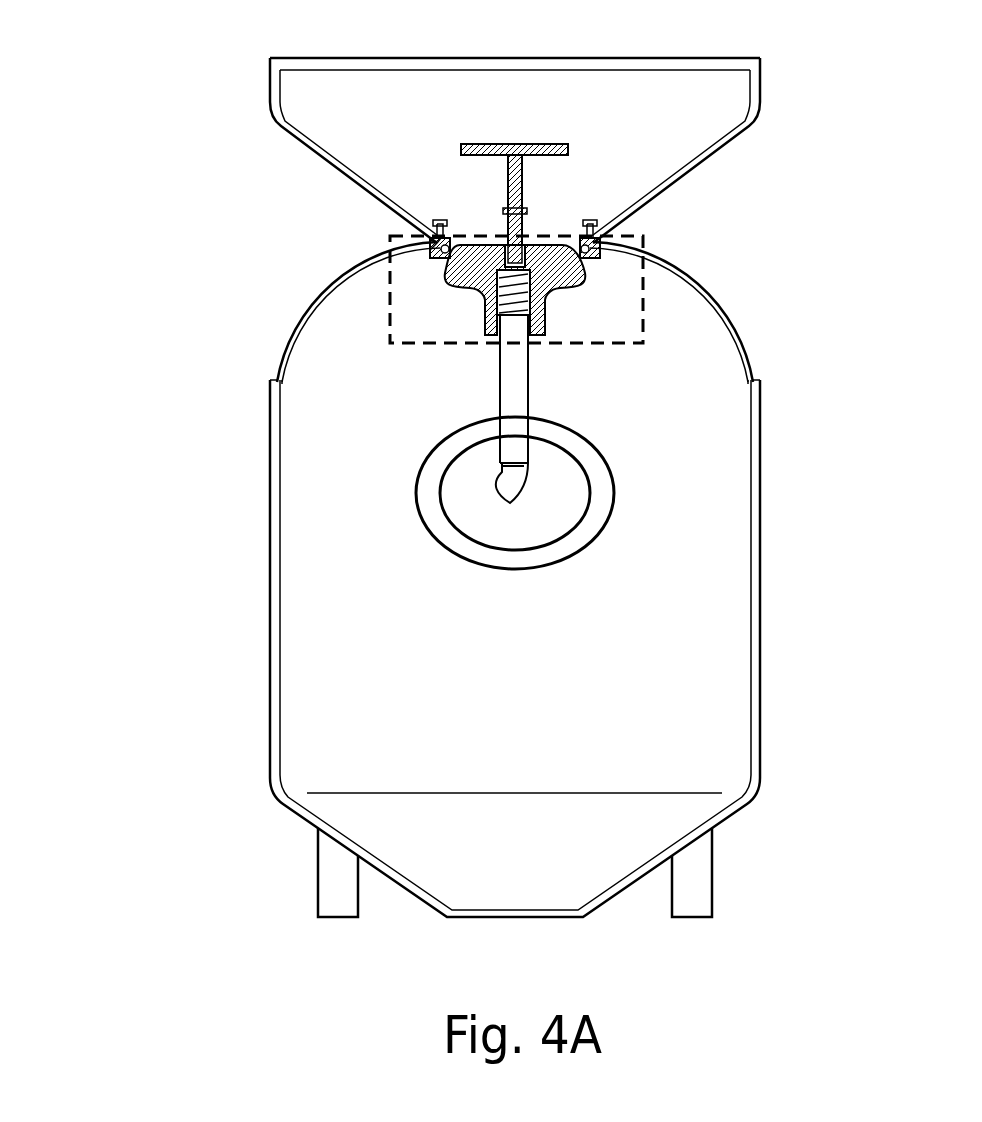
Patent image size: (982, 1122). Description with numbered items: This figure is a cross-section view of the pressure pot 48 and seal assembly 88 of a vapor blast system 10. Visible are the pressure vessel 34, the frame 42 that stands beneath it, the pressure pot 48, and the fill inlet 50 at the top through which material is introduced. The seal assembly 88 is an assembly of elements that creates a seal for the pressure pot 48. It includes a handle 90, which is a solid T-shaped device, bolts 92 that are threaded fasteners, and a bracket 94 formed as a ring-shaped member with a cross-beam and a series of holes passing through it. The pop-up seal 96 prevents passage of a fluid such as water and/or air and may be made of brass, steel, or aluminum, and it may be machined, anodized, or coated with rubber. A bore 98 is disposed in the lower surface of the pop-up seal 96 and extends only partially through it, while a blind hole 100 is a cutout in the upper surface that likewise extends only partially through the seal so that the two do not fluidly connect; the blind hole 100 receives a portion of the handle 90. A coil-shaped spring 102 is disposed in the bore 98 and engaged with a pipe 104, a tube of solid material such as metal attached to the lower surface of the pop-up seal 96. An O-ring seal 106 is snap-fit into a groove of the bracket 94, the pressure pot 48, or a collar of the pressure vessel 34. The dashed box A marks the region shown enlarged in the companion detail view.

The dispensing system 10 is at (145, 198).
The pressure vessel 34 is at (768, 425).
The frame 42 is at (714, 876).
The pressure pot 48 is at (284, 344).
The fill inlet 50 is at (270, 82).
The seal assembly 88 is at (614, 181).
The handle 90 is at (530, 145).
The bolts 92 is at (438, 222).
The bracket 94 is at (600, 252).
The pop-up seal 96 is at (458, 282).
The bore 98 is at (546, 298).
The blind hole 100 is at (490, 248).
The spring 102 is at (494, 300).
The pipe 104 is at (530, 383).
The O-ring seal 106 is at (432, 256).
The box A is at (364, 230).